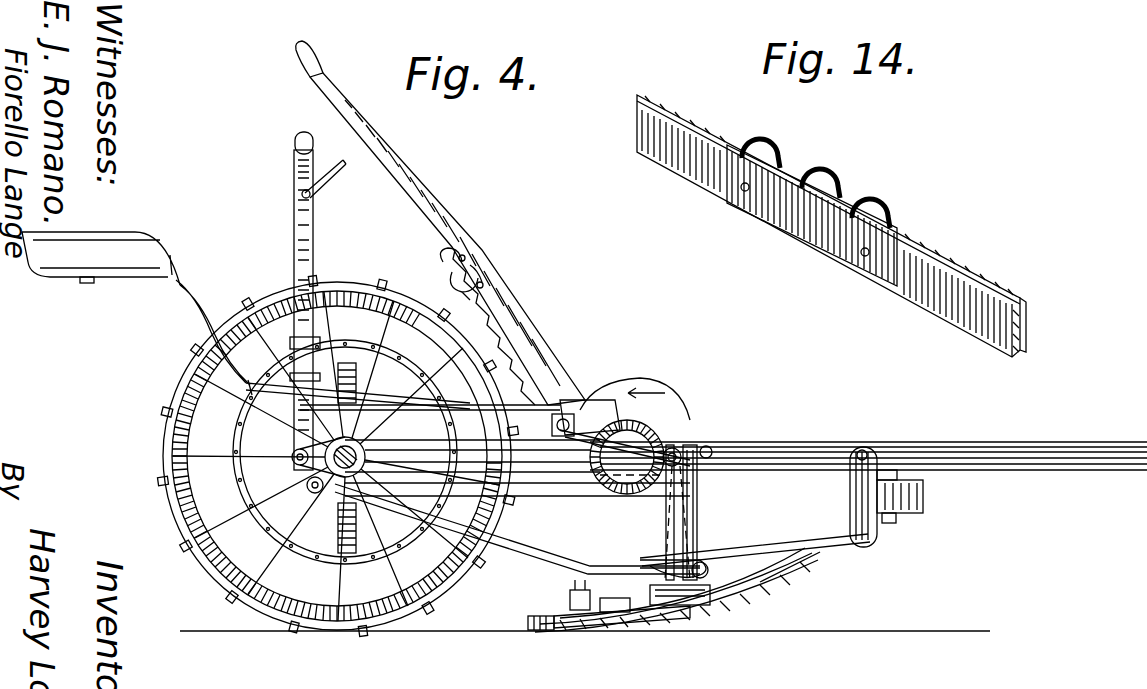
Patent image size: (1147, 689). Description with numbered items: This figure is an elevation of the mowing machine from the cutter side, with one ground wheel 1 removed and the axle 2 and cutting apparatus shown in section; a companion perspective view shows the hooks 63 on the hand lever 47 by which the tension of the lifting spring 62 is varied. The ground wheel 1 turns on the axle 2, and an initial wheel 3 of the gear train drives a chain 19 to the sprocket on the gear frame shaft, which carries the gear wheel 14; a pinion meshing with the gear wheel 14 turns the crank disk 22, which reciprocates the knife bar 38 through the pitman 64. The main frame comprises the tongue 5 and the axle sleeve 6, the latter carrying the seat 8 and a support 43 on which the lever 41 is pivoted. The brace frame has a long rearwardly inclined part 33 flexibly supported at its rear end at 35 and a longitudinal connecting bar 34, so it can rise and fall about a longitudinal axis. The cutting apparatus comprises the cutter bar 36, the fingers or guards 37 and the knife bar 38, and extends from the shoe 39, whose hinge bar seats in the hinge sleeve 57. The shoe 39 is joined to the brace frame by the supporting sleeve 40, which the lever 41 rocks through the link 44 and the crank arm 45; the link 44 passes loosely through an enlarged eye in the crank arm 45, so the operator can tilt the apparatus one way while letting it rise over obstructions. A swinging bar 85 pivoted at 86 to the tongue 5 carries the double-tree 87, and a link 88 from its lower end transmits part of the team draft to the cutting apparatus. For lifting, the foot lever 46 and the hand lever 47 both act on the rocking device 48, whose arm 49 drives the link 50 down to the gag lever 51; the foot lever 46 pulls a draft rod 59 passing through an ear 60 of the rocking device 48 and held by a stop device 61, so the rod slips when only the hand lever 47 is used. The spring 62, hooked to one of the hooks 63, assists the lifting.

In FIG. 4, the ground wheel 1 is at (170, 522).
In FIG. 4, the axle 2 is at (462, 457).
In FIG. 4, the initial wheel of the train of gearing 3 is at (345, 555).
In FIG. 4, the tongue 5 is at (750, 444).
In FIG. 4, the axle sleeve 6 is at (306, 498).
In FIG. 4, the seat 8 is at (136, 308).
In FIG. 4, the gear wheel 14 is at (430, 391).
In FIG. 4, the chain 19 is at (345, 441).
In FIG. 4, the crank disk 22 is at (640, 440).
In FIG. 4, the rearwardly inclined part of the brace frame 33 is at (556, 566).
In FIG. 4, the connecting bar of the brace frame 34 is at (668, 608).
In FIG. 4, the flexible support of the brace frame 35 is at (331, 458).
In FIG. 4, the cutter bar 36 is at (563, 630).
In FIG. 4, the fingers or guards 37 is at (640, 612).
In FIG. 4, the knife bar 38 is at (620, 620).
In FIG. 4, the shoe 39 is at (740, 622).
In FIG. 4, the supporting sleeve 40 is at (700, 560).
In FIG. 4, the lever 41 is at (296, 225).
In FIG. 4, the support 43 is at (305, 445).
In FIG. 4, the link 44 is at (645, 523).
In FIG. 4, the crank arm 45 is at (698, 510).
In FIG. 4, the foot lever 46 is at (246, 386).
In FIG. 4, the hand lever 47 is at (517, 312).
In FIG. 14, the hand lever 47 is at (928, 257).
In FIG. 4, the rocking device 48 is at (606, 398).
In FIG. 4, the arm 49 is at (680, 450).
In FIG. 4, the link 50 is at (728, 439).
In FIG. 4, the gag lever 51 is at (660, 546).
In FIG. 4, the hinge sleeve 57 is at (752, 610).
In FIG. 4, the draft rod 59 is at (567, 412).
In FIG. 4, the ear 60 is at (622, 380).
In FIG. 4, the stop device 61 is at (661, 392).
In FIG. 4, the spring 62 is at (508, 375).
In FIG. 4, the hooks 63 is at (445, 274).
In FIG. 14, the hooks 63 is at (783, 140).
In FIG. 4, the pitman 64 is at (517, 509).
In FIG. 4, the swinging bar or plate 85 is at (852, 498).
In FIG. 4, the pivot 86 is at (873, 450).
In FIG. 4, the double-tree 87 is at (924, 500).
In FIG. 4, the link 88 is at (842, 545).